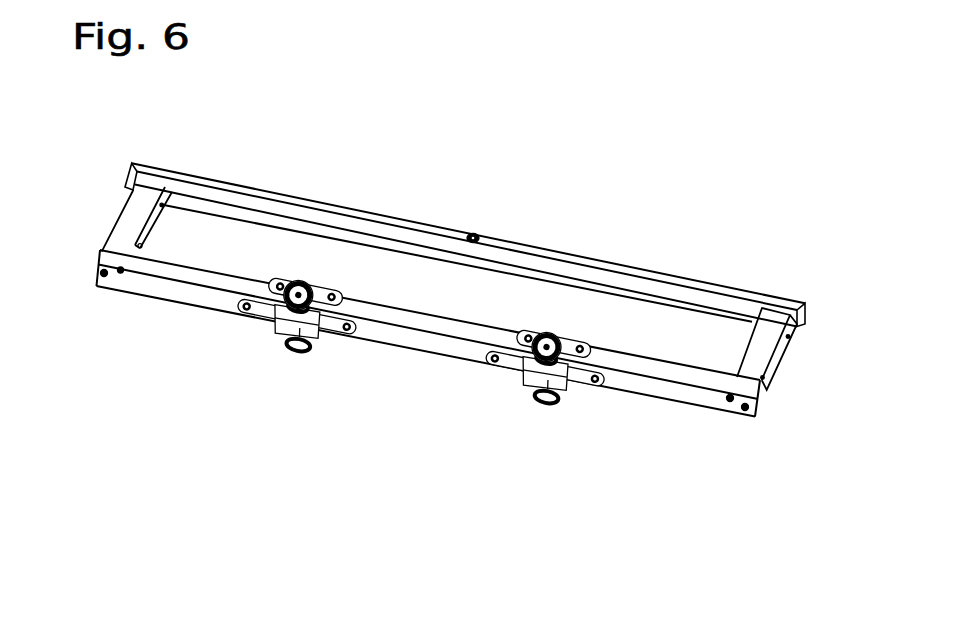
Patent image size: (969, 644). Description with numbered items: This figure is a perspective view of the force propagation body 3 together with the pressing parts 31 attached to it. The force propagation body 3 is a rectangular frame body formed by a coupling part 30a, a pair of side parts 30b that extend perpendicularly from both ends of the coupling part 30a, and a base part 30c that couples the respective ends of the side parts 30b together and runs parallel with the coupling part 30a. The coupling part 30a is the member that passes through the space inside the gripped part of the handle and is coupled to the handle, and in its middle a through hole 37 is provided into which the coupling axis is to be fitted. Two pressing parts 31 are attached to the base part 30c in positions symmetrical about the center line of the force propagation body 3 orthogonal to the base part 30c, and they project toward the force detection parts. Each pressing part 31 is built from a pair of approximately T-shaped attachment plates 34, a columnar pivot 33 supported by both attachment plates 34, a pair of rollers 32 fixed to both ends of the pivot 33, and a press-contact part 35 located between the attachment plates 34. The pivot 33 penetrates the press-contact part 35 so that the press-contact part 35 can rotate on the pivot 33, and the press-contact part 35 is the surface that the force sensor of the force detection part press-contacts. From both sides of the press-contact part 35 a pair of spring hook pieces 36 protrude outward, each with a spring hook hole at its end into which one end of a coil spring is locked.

The force propagation body 3 is at (456, 291).
The coupling part 30a is at (318, 206).
The side part 30b is at (134, 220).
The base part 30c is at (697, 374).
The pressing part 31 is at (418, 347).
The roller 32 is at (316, 294).
The pivot 33 is at (297, 283).
The attachment plate 34 is at (285, 283).
The press-contact part 35 is at (302, 338).
The spring hook piece 36 is at (260, 323).
The through hole 37 is at (473, 233).